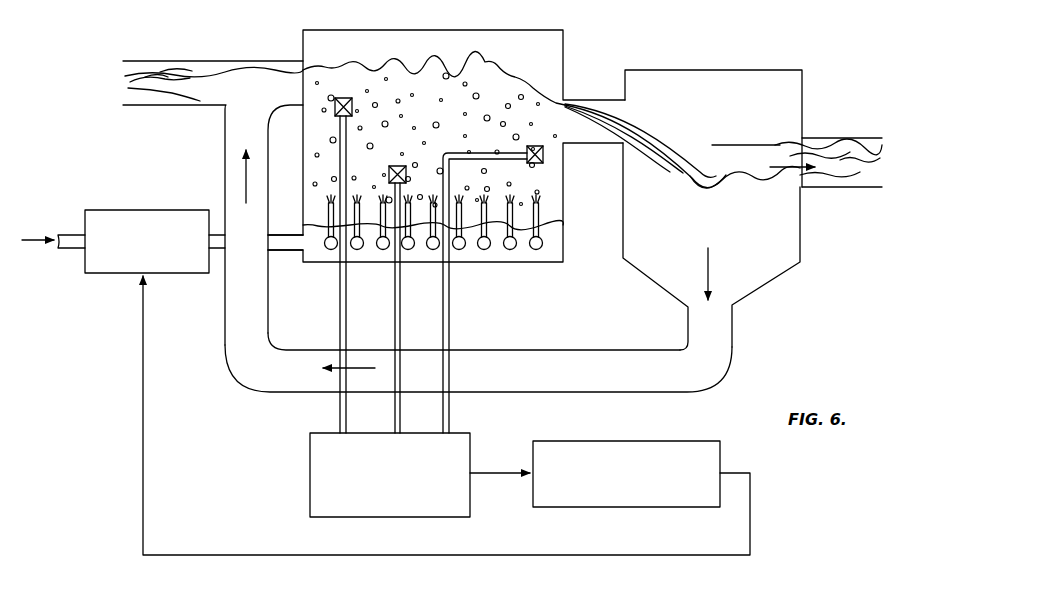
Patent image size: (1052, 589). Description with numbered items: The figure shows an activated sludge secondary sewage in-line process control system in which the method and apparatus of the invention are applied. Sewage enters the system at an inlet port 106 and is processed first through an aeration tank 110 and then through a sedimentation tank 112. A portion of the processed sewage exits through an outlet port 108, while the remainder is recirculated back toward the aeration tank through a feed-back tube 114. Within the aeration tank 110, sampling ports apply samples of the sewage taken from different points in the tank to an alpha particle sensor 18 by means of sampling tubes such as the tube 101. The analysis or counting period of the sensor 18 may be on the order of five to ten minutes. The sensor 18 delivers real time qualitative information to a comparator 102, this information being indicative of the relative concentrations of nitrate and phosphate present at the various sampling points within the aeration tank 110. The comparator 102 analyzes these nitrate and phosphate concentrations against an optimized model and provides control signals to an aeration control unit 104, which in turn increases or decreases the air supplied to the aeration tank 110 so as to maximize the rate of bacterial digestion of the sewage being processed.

The inlet port 106 is at (192, 65).
The aeration tank 110 is at (534, 45).
The sedimentation tank 112 is at (722, 70).
The outlet port 108 is at (848, 146).
The feed-back tube 114 is at (673, 372).
The aeration control unit 104 is at (150, 210).
The sampling tube 101 is at (449, 303).
The alpha particle sensor 18 is at (312, 497).
The comparator 102 is at (664, 492).